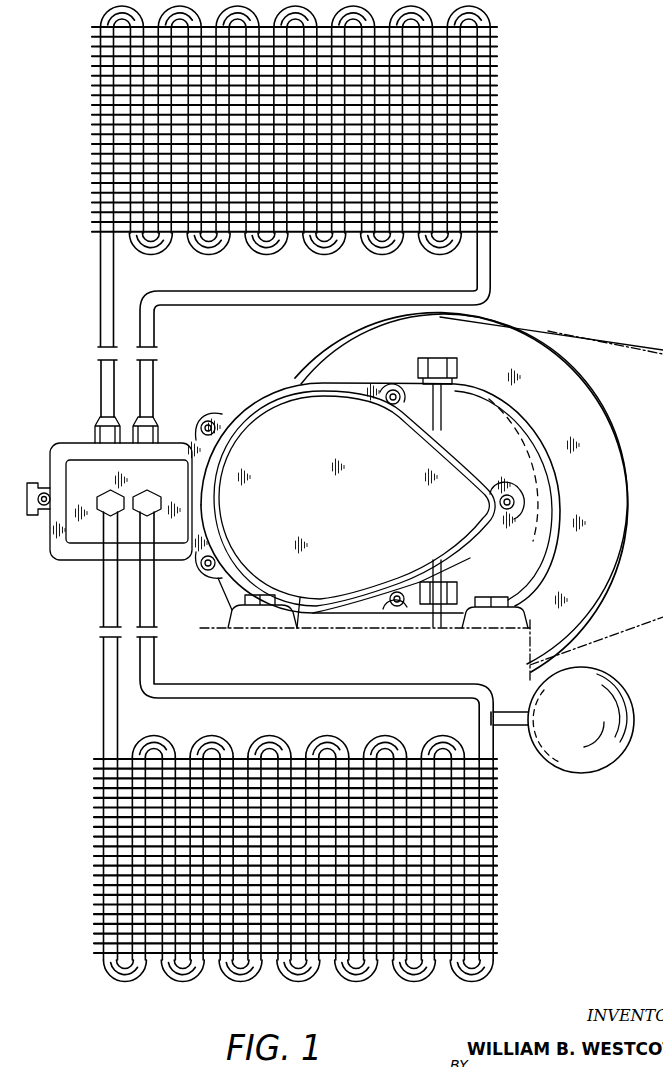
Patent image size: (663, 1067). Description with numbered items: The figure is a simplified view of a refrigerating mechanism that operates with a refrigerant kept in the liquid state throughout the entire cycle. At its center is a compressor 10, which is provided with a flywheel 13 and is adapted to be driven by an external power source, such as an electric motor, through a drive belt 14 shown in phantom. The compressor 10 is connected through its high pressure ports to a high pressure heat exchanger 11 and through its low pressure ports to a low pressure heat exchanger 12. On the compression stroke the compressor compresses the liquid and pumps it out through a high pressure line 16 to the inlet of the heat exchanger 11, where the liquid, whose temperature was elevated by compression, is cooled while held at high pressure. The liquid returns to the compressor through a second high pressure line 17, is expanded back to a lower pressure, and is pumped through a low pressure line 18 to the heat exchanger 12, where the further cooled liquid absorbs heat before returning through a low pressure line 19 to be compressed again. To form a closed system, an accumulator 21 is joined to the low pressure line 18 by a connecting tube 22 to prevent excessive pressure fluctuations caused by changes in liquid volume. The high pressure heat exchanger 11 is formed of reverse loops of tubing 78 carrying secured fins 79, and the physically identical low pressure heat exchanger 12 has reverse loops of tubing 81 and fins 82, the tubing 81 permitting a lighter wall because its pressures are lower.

The compressor 10 is at (271, 389).
The high pressure heat exchanger 11 is at (292, 141).
The low pressure heat exchanger 12 is at (326, 867).
The flywheel 13 is at (623, 472).
The drive belt 14 is at (619, 348).
The high pressure line 16 is at (99, 371).
The second high pressure line 17 is at (156, 370).
The low pressure line 18 is at (234, 684).
The low pressure line 19 is at (101, 601).
The accumulator 21 is at (609, 758).
The connecting tube 22 is at (514, 712).
The reverse loops of tubing 78 is at (443, 249).
The fins 79 is at (99, 211).
The reverse loops of tubing 81 is at (489, 972).
The fins 82 is at (500, 915).